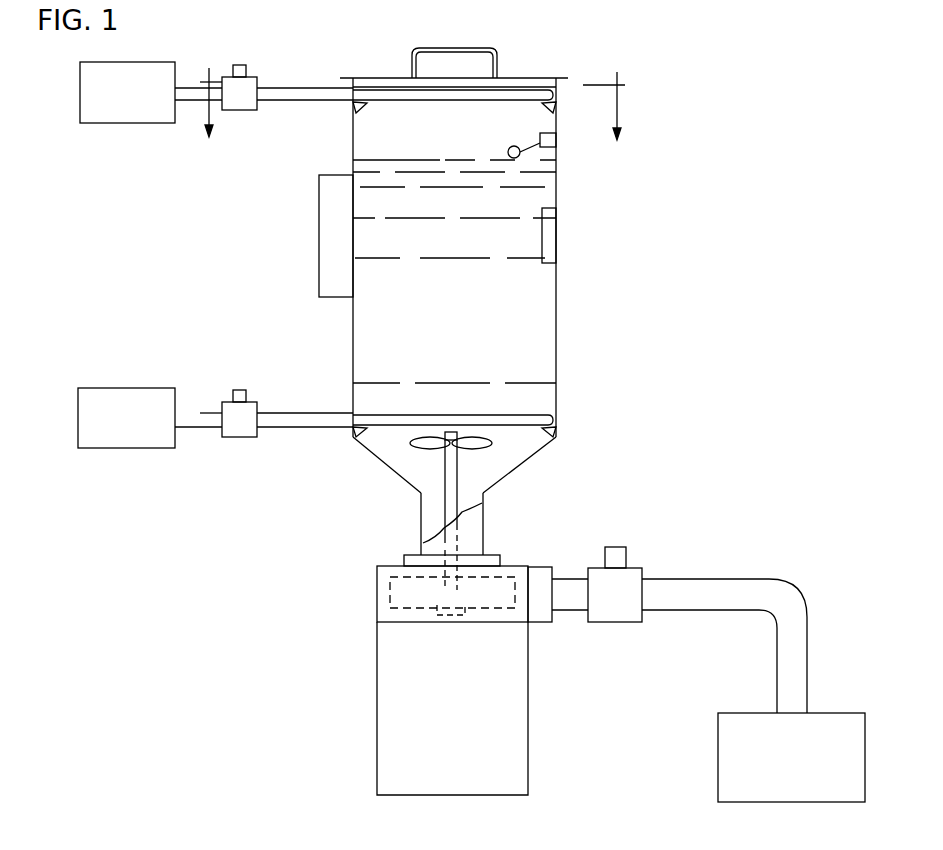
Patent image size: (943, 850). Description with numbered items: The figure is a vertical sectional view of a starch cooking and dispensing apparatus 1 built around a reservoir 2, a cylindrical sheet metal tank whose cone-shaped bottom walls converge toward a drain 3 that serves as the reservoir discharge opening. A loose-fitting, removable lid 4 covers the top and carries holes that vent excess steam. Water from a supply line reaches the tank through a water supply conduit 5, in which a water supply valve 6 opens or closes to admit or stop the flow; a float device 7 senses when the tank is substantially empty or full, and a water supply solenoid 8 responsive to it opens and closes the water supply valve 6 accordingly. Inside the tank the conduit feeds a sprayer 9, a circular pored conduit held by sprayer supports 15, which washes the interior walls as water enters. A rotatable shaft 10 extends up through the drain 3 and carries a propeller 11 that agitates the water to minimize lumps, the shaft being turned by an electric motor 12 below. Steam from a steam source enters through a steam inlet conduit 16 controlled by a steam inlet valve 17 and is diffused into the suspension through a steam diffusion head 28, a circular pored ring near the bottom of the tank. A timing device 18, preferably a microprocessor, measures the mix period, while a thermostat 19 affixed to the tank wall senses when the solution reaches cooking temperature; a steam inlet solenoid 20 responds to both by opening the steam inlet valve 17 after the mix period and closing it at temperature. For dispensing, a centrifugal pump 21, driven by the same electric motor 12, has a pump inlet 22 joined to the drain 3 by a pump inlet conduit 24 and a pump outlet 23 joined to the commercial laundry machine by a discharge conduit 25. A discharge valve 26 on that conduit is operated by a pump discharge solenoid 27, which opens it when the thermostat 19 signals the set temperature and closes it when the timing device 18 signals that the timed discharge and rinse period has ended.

The starch cooking and dispensing apparatus 1 is at (657, 183).
The reservoir 2 is at (556, 372).
The drain 3 is at (433, 495).
The lid 4 is at (530, 78).
The water supply conduit 5 is at (284, 92).
The water supply valve 6 is at (240, 110).
The float device 7 is at (556, 140).
The water supply solenoid 8 is at (246, 70).
The sprayer 9 is at (400, 95).
The rotatable shaft 10 is at (458, 465).
The propeller 11 is at (415, 440).
The electric motor 12 is at (376, 718).
The sprayer supports 15 is at (365, 110).
The steam inlet conduit 16 is at (313, 412).
The steam inlet valve 17 is at (240, 437).
The timing device 18 is at (319, 235).
The thermostat 19 is at (556, 232).
The steam inlet solenoid 20 is at (240, 390).
The centrifugal pump 21 is at (377, 595).
The pump inlet 22 is at (497, 555).
The pump outlet 23 is at (545, 572).
The pump inlet conduit 24 is at (421, 520).
The discharge conduit 25 is at (680, 578).
The discharge valve 26 is at (605, 615).
The pump discharge solenoid 27 is at (618, 552).
The steam diffusion head 28 is at (553, 410).